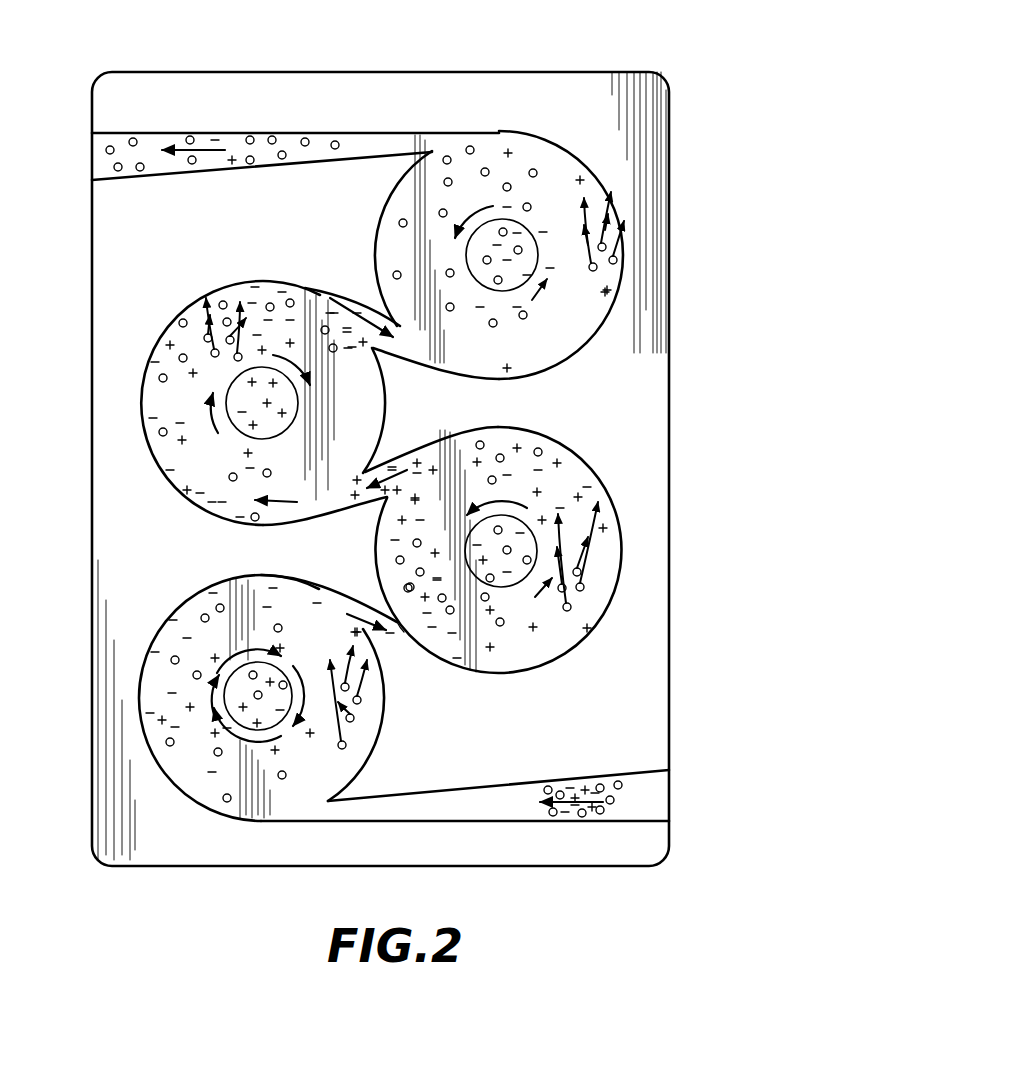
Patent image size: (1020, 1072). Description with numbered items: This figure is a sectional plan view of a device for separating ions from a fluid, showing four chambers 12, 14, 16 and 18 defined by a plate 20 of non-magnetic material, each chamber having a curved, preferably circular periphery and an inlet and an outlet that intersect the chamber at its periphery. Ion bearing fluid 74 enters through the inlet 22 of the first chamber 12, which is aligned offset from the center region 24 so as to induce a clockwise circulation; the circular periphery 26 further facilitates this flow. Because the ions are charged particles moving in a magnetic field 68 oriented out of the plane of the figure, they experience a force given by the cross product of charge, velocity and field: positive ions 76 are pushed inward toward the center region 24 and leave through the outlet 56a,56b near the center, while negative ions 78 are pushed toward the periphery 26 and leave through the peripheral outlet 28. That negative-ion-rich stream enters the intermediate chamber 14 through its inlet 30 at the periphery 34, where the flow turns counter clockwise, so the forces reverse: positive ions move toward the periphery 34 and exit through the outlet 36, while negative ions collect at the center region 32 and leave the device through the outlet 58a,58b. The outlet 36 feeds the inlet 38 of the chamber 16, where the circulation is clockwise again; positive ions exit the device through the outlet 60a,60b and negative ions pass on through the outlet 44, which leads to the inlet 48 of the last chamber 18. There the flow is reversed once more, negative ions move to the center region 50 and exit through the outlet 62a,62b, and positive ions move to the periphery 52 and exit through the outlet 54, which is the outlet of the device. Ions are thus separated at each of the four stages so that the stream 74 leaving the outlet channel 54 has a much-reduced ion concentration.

The first chamber 12 is at (354, 732).
The intermediate chamber 14 is at (578, 549).
The intermediate chamber 16 is at (226, 395).
The last chamber 18 is at (522, 257).
The plate 20 is at (572, 84).
The inlet 22 is at (633, 822).
The center region 24 is at (256, 694).
The periphery 26 is at (140, 700).
The peripheral outlet 28 is at (370, 621).
The inlet 30 is at (418, 645).
The center region 32 is at (290, 403).
The periphery 34 is at (578, 646).
The outlet 36 is at (382, 466).
The inlet 38 is at (378, 500).
The outlet 44 is at (363, 310).
The inlet of fourth cyclone 48 is at (440, 377).
The center region 50 is at (520, 252).
The periphery 52 is at (577, 162).
The outlet 54 is at (232, 140).
The outlet 56a,56b is at (278, 722).
The outlet 58a,58b is at (518, 528).
The outlet 60a,60b is at (265, 420).
The outlet 62a,62b is at (512, 283).
The magnetic field 68 is at (616, 258).
The ion bearing fluid 74 is at (163, 138).
The positive ions 76 is at (215, 796).
The negative ions 78 is at (178, 612).